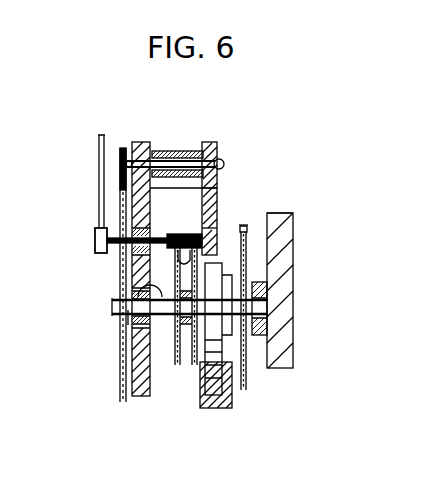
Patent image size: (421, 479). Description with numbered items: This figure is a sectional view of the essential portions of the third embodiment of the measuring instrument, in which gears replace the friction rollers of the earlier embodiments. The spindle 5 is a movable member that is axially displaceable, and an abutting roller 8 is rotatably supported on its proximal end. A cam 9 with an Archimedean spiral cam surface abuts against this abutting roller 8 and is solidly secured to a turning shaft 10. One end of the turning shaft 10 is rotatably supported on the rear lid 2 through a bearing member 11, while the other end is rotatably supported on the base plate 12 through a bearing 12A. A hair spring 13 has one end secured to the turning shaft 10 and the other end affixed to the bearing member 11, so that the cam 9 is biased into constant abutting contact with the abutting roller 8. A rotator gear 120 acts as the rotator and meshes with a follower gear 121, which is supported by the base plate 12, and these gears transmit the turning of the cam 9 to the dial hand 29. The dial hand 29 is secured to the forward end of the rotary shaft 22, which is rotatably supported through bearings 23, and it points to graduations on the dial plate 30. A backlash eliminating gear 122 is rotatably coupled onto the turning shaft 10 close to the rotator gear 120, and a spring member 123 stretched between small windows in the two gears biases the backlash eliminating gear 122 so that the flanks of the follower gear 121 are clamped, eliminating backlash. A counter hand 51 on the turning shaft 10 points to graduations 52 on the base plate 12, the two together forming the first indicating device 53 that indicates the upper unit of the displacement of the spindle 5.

The rear lid 2 is at (293, 242).
The spindle 5 is at (233, 397).
The abutting roller 8 is at (215, 402).
The cam 9 is at (243, 364).
The turning shaft 10 is at (150, 288).
The bearing member 11 is at (256, 293).
The base plate 12 is at (140, 396).
The bearing 12A is at (122, 317).
The hair spring 13 is at (252, 222).
The rotary shaft 22 is at (116, 250).
The bearings 23 is at (156, 233).
The dial hand 29 is at (98, 148).
The dial plate 30 is at (122, 335).
The counter hand 51 is at (223, 160).
The graduations 52 is at (157, 150).
The first indicating device 53 is at (197, 150).
The rotator gear 120 is at (194, 366).
The follower gear 121 is at (217, 232).
The backlash eliminating gear 122 is at (176, 366).
The spring member 123 is at (240, 226).